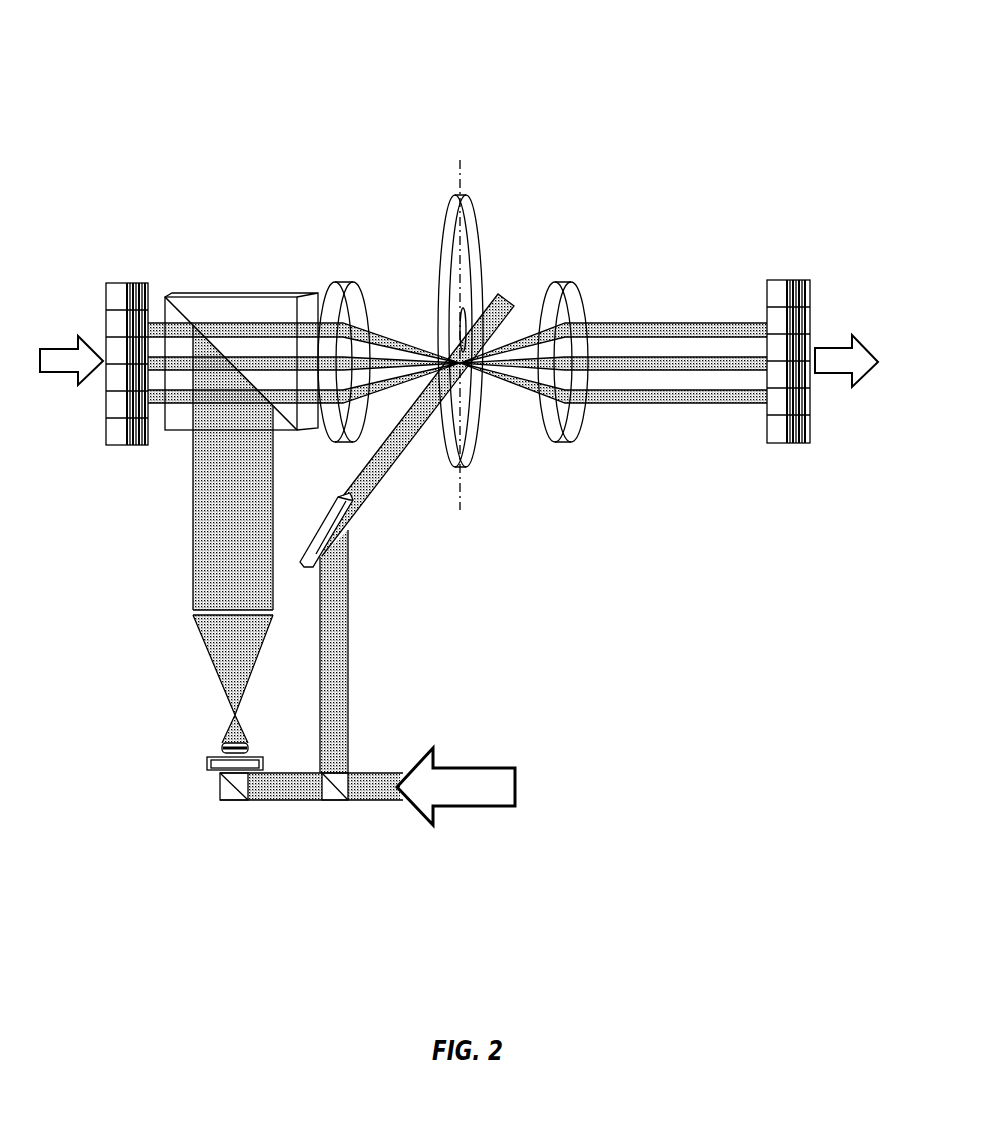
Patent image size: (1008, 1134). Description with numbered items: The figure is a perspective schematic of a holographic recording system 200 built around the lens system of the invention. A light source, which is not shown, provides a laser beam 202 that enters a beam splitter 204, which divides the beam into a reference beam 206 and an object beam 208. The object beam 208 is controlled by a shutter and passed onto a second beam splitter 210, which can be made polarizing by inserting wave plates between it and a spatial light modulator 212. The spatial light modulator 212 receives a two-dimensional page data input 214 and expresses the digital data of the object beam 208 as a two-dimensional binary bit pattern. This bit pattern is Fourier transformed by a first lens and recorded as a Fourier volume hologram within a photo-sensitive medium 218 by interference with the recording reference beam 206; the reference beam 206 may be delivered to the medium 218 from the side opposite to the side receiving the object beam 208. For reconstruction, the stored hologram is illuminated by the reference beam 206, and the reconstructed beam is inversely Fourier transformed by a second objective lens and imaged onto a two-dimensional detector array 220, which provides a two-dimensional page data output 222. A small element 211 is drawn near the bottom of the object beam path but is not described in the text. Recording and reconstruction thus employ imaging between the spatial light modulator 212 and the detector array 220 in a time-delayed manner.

The holographic recording system 200 is at (124, 76).
The laser beam 202 is at (478, 768).
The beam splitter 204 is at (333, 802).
The reference beam 206 is at (350, 658).
The object beam 208 is at (192, 627).
The beam splitter 210 is at (210, 293).
The detector plate 211 is at (207, 763).
The spatial light modulator 212 is at (120, 282).
The 2D page data input 214 is at (75, 347).
The photo-sensitive medium 218 is at (447, 222).
The two-dimensional detector array 220 is at (783, 280).
The 2D page data output 222 is at (843, 347).